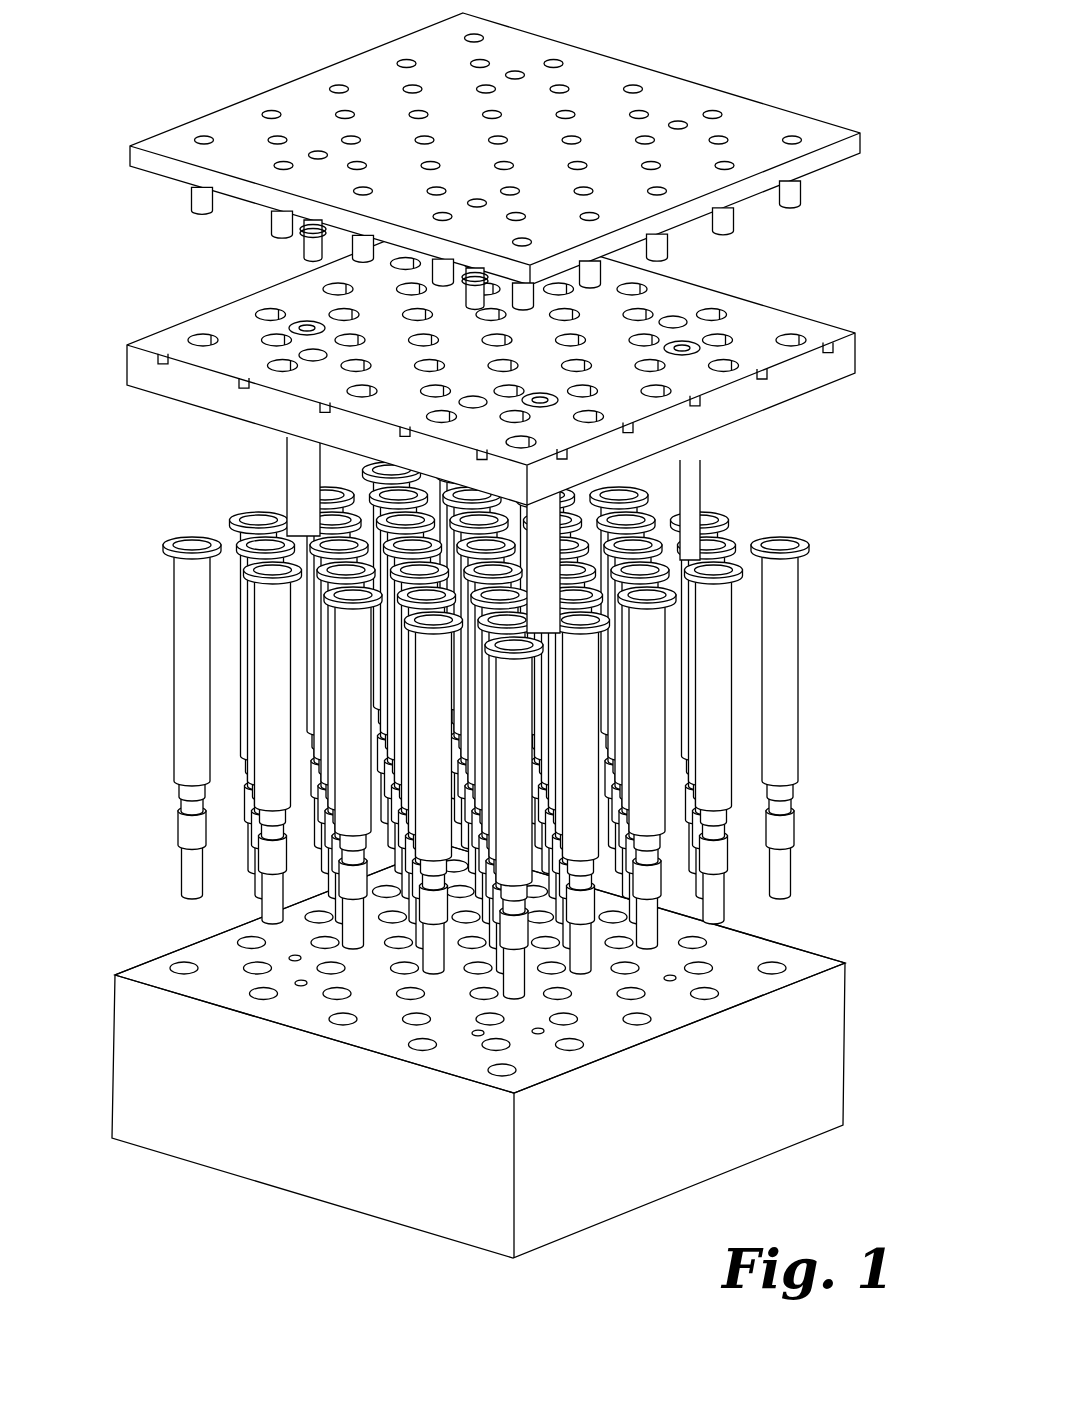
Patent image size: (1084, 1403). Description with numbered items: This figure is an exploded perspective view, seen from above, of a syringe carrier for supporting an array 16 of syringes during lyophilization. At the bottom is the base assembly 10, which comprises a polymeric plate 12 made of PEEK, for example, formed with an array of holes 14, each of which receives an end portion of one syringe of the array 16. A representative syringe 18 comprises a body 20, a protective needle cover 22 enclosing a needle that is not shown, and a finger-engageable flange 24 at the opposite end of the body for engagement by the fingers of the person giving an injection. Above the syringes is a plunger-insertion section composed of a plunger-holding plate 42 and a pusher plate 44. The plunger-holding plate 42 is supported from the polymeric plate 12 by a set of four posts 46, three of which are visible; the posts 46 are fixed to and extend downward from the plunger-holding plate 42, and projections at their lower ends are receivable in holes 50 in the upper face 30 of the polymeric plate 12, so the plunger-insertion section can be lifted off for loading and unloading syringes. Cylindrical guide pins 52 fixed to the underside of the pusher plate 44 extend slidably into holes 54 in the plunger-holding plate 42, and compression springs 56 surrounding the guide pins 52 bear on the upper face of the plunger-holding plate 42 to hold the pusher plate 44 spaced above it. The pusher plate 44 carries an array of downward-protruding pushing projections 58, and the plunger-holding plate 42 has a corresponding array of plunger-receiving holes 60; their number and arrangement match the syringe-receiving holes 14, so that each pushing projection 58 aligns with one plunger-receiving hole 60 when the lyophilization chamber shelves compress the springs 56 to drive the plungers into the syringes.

The base assembly 10 is at (500, 640).
The polymeric plate 12 is at (112, 1105).
The holes 14 is at (775, 965).
The array of syringes 16 is at (536, 717).
The syringe 18 is at (822, 713).
The body 20 is at (783, 655).
The protective needle cover 22 is at (785, 822).
The finger-engageable flange 24 is at (810, 545).
The upper face 30 is at (815, 965).
The plunger-holding plate 42 is at (845, 332).
The pusher plate 44 is at (836, 158).
The posts 46 is at (298, 485).
The holes 50 is at (292, 957).
The cylindrical guide pins 52 is at (313, 245).
The holes 54 is at (675, 320).
The compression springs 56 is at (313, 224).
The pushing projections 58 is at (205, 197).
The plunger-receiving holes 60 is at (795, 335).